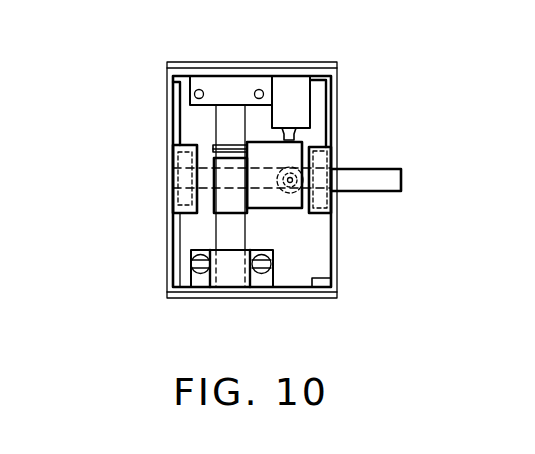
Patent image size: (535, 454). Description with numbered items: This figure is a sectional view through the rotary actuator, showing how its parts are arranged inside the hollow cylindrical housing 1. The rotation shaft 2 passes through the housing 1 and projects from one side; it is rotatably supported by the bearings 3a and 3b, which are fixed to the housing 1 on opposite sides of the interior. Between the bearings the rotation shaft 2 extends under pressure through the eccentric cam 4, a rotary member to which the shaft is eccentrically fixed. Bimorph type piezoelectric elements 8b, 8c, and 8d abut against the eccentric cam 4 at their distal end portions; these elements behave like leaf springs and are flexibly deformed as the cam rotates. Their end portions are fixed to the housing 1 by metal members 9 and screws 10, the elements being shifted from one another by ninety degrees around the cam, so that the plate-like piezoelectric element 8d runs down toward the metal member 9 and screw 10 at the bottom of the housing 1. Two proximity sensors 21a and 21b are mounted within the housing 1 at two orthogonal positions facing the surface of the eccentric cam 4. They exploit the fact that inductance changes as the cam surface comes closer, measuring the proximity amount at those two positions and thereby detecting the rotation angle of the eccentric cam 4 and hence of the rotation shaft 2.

The housing 1 is at (210, 62).
The rotation shaft 2 is at (378, 185).
The bearing 3a is at (323, 198).
The bearing 3b is at (175, 198).
The eccentric cam 4 is at (277, 200).
The piezoelectric element 8b is at (236, 118).
The piezoelectric element 8c is at (212, 148).
The piezoelectric element 8d is at (222, 233).
The metal member 9 is at (230, 280).
The screw 10 is at (259, 278).
The proximity sensor 21a is at (297, 111).
The proximity sensor 21b is at (289, 166).